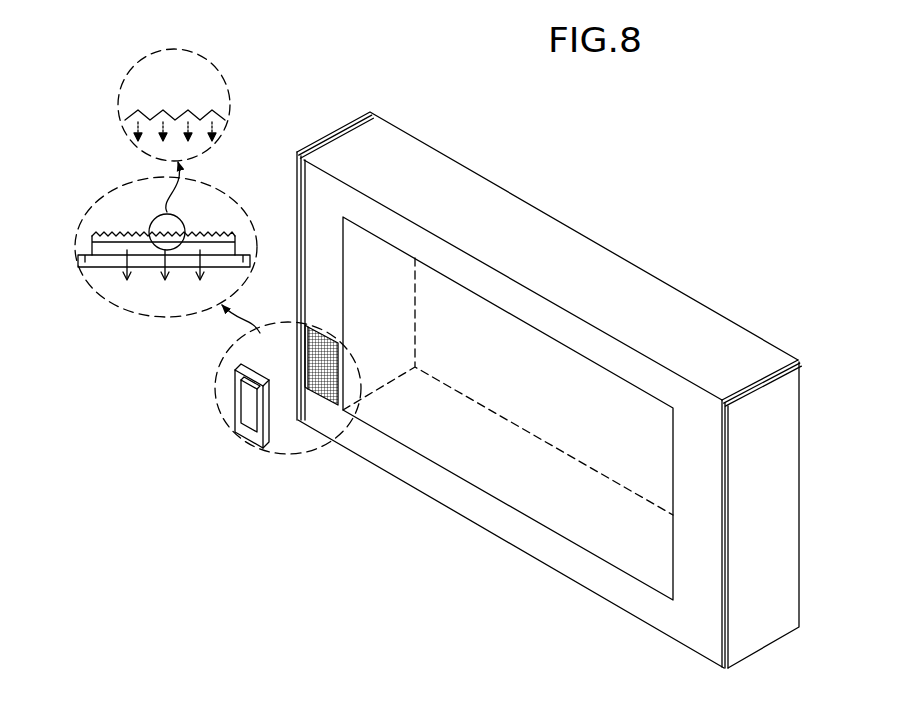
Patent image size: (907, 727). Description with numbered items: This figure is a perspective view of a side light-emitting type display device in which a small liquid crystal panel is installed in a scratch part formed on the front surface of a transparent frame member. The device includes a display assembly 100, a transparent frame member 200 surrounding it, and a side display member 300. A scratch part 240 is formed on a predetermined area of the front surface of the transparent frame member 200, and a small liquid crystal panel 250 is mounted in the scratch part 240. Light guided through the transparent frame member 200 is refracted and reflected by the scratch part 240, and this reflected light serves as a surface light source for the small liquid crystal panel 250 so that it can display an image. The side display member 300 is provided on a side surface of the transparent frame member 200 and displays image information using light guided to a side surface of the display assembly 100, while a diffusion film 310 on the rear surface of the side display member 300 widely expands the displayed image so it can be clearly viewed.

The display assembly 100 is at (588, 382).
The transparent frame member 200 is at (556, 220).
The scratch part 240 is at (325, 400).
The small liquid crystal panel 250 is at (252, 425).
The side display member 300 is at (800, 388).
The diffusion film 310 is at (783, 358).